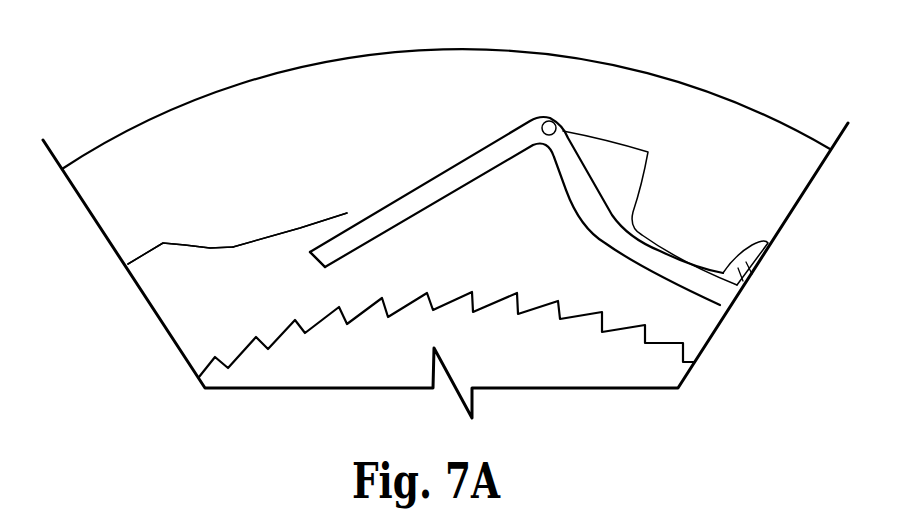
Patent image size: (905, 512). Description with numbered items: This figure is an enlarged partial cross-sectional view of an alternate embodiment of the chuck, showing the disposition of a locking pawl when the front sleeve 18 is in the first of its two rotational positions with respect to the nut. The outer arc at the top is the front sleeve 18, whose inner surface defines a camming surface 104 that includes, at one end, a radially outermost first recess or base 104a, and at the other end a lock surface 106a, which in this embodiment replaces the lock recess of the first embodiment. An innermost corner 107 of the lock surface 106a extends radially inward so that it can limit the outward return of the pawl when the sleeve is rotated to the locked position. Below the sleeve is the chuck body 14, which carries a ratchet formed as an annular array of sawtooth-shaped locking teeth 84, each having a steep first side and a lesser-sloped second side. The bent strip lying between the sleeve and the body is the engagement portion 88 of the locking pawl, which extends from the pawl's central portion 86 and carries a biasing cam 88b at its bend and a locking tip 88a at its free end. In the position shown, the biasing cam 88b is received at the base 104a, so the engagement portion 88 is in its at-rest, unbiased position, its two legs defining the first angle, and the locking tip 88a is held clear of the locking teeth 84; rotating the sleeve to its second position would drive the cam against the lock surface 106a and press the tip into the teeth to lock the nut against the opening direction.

The body 14 is at (557, 367).
The front sleeve 18 is at (327, 131).
The locking teeth 84 is at (373, 319).
The central portion 86 is at (680, 268).
The engagement portion 88 is at (414, 208).
The locking tip 88a is at (314, 258).
The biasing cam 88b is at (527, 120).
The camming surface 104 is at (373, 184).
The base 104a is at (561, 124).
The lock surface 106a is at (183, 242).
The innermost corner 107 is at (233, 246).